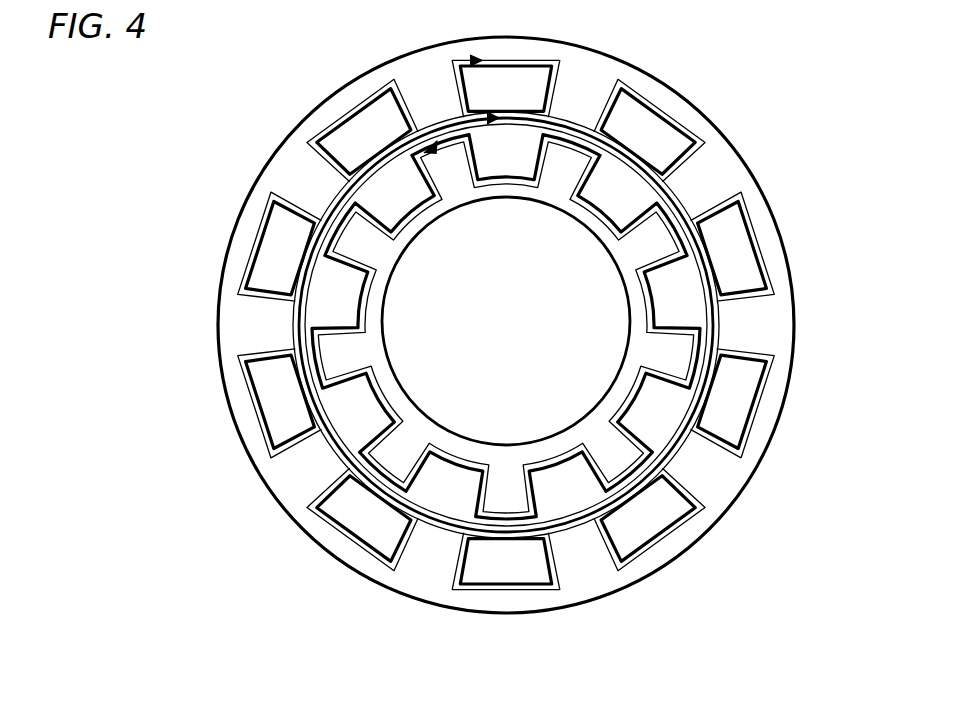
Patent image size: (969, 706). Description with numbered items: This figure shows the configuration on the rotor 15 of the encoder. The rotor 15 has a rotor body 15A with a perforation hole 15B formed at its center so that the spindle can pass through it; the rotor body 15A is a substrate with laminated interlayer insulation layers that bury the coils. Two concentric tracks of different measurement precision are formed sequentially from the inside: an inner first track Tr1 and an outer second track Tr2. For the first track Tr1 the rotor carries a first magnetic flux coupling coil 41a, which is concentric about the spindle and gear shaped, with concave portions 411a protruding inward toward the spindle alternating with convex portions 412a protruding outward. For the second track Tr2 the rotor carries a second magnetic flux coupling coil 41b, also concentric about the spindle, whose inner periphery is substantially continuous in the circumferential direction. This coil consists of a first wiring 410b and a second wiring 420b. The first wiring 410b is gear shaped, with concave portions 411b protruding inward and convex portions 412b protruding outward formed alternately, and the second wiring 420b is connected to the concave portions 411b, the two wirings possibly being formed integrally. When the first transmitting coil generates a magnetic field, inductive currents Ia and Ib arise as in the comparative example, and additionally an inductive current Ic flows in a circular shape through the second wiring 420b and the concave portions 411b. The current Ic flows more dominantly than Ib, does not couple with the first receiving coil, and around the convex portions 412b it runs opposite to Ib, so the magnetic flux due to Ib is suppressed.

The rotor 15 is at (779, 74).
The rotor body 15A is at (246, 215).
The perforation hole 15B is at (516, 199).
The inductive current Ia is at (320, 210).
The inductive current Ib is at (344, 109).
The inductive current Ic is at (330, 129).
The first track Tr1 is at (629, 240).
The second track Tr2 is at (738, 179).
The first magnetic flux coupling coil 41a is at (118, 293).
The concave portions 411a is at (345, 300).
The convex portions 412a is at (308, 343).
The second magnetic flux coupling coil 41b is at (82, 393).
The second wiring 420b is at (300, 382).
The first wiring 410b is at (152, 417).
The convex portions 412b is at (256, 422).
The concave portions 411b is at (308, 452).